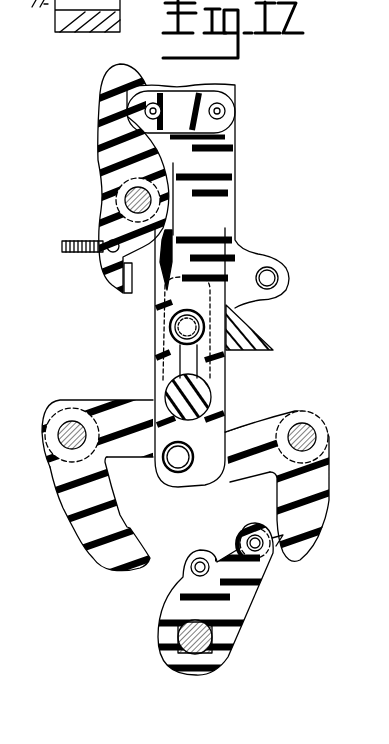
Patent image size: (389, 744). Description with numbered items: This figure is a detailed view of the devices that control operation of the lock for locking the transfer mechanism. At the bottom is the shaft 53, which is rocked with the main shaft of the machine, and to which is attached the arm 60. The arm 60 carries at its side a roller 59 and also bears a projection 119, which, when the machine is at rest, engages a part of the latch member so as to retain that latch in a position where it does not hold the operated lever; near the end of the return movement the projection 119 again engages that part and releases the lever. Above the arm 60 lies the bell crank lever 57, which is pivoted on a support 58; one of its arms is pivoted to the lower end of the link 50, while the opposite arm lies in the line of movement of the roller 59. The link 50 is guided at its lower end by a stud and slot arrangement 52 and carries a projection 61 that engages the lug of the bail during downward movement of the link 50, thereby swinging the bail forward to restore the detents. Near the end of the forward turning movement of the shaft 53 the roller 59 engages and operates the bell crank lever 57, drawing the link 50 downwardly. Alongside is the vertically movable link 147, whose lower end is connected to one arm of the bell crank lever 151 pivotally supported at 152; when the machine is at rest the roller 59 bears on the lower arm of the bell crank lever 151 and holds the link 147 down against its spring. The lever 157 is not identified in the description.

The lever 157 is at (115, 135).
The link 147 is at (215, 195).
The link 50 is at (165, 262).
The stud and slot arrangement 52 is at (185, 355).
The projection 61 is at (266, 340).
The bell crank lever 151 is at (248, 437).
The pivotal support 152 is at (306, 437).
The support 58 is at (72, 435).
The bell crank lever 57 is at (86, 510).
The roller 59 is at (258, 548).
The projection 119 is at (195, 573).
The arm 60 is at (240, 606).
The shaft 53 is at (181, 664).